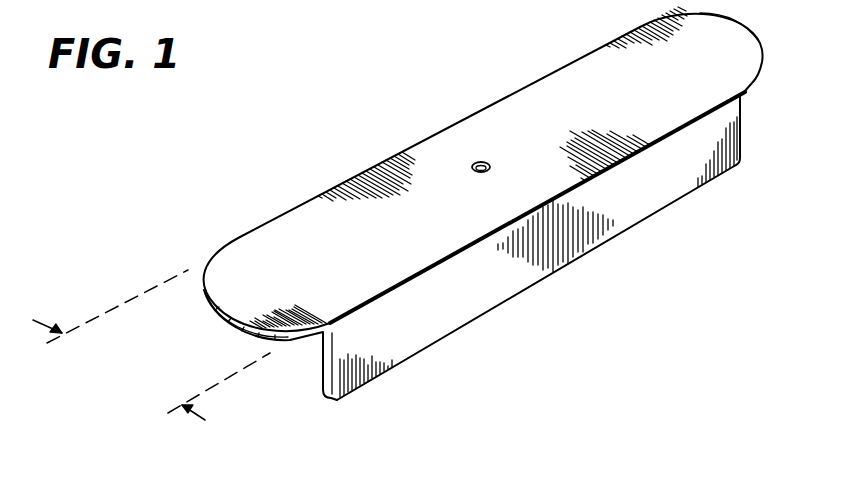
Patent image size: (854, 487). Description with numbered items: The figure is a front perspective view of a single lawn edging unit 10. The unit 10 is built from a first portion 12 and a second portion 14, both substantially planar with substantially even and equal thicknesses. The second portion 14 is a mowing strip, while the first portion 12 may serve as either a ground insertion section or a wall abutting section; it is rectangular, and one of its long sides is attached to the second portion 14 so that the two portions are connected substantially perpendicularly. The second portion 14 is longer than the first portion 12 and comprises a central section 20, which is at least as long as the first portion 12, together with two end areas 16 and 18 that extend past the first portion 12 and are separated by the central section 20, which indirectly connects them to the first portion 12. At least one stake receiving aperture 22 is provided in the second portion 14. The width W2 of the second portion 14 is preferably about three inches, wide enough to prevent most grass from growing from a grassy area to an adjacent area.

The lawn edging unit 10 is at (302, 197).
The first portion 12 is at (470, 293).
The second portion 14 is at (610, 77).
The end area 16 is at (222, 300).
The end area 18 is at (727, 34).
The central section 20 is at (377, 182).
The stake receiving aperture 22 is at (480, 160).
The width of the second portion W2 is at (151, 363).